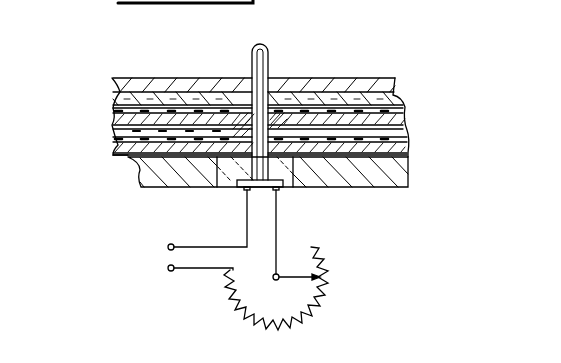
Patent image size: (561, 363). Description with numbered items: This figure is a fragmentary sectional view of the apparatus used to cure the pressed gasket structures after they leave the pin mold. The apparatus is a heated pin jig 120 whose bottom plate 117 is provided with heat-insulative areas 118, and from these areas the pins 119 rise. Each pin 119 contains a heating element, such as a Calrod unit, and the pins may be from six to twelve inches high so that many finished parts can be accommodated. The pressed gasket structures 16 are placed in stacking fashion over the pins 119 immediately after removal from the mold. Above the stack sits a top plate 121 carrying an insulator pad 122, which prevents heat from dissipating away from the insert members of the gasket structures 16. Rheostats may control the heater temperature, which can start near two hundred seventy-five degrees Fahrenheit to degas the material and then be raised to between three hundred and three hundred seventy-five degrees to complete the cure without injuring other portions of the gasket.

The pressed gasket structure 16 is at (113, 119).
The bottom plate 117 is at (362, 172).
The heat-insulative area 118 is at (288, 183).
The pin 119 is at (268, 63).
The heated pin jig 120 is at (423, 136).
The top plate 121 is at (370, 83).
The insulator pad 122 is at (388, 103).